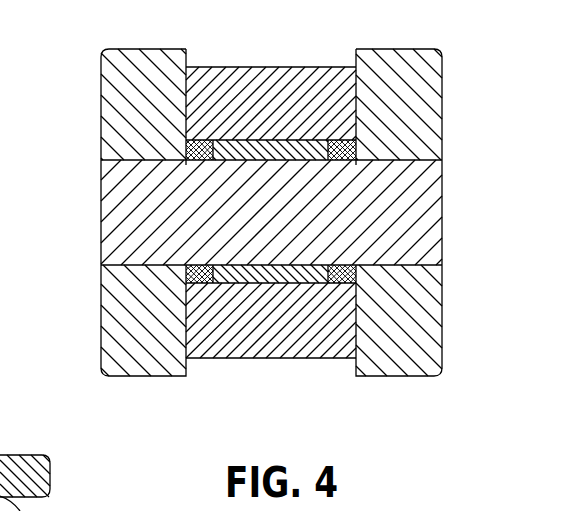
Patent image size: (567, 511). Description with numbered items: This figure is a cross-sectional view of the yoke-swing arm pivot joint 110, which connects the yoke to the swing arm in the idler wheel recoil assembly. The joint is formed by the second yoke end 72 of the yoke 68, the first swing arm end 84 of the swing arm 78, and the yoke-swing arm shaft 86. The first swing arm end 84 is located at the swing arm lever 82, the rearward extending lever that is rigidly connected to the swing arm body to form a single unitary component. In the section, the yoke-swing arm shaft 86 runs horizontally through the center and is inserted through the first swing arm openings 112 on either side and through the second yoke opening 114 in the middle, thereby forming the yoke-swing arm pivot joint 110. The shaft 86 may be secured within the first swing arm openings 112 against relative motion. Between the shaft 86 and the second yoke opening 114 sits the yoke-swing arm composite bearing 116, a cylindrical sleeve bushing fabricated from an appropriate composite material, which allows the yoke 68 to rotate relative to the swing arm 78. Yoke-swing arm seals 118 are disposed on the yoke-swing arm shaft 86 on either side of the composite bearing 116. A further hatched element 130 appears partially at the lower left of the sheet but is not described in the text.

The yoke-swing arm pivot joint 110 is at (80, 95).
The yoke 68 is at (271, 77).
The second yoke end 72 is at (262, 97).
The swing arm 78 is at (407, 191).
The swing arm lever 82 is at (407, 191).
The first swing arm end 84 is at (400, 72).
The yoke-swing arm shaft 86 is at (413, 240).
The first swing arm openings 112 is at (150, 162).
The second yoke opening 114 is at (248, 164).
The yoke-swing arm composite bearing 116 is at (276, 284).
The yoke-swing arm seals 118 is at (190, 283).
The adjacent roller 130 is at (12, 498).